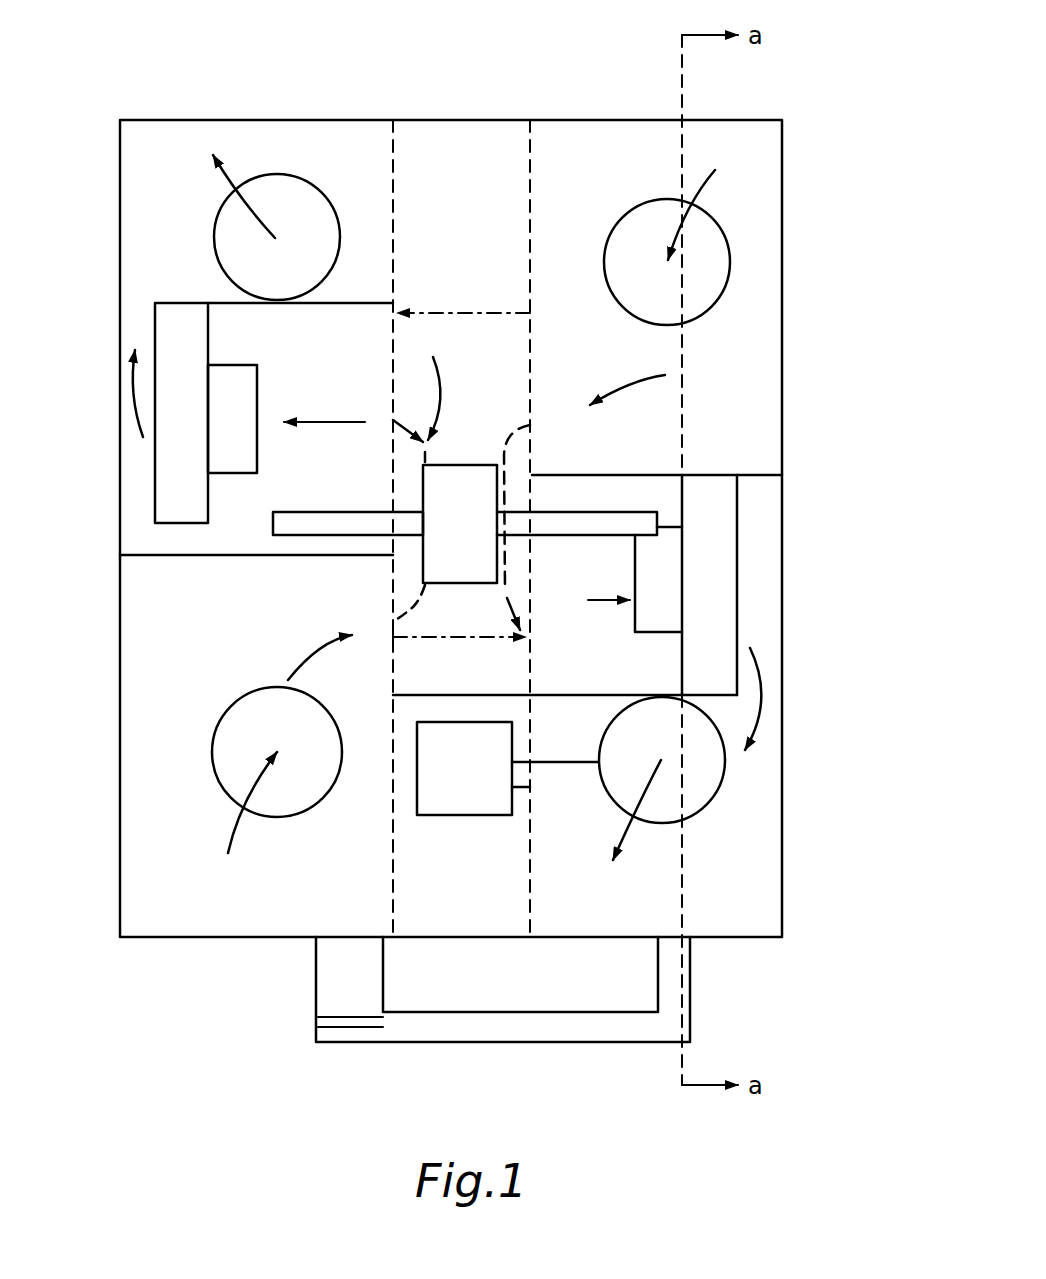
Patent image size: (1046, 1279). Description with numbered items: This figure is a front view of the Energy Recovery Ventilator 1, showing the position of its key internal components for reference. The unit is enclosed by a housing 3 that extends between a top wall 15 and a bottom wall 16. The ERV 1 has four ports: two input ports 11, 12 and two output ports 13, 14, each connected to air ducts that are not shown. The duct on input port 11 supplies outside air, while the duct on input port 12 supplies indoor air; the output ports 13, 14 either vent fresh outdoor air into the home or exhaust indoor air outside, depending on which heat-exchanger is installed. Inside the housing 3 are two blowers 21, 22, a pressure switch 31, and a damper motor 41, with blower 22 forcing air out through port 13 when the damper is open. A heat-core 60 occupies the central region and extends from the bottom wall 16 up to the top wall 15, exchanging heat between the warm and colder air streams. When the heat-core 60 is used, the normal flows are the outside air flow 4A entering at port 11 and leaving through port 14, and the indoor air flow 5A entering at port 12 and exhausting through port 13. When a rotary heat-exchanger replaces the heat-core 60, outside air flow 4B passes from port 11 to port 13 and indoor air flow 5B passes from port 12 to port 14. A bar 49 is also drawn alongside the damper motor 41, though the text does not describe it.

The Energy Recovery Ventilator 1 is at (741, 106).
The housing 3 is at (788, 310).
The input port 11 is at (238, 707).
The input port 12 is at (728, 247).
The output port 13 is at (715, 800).
The output port 14 is at (306, 180).
The top wall 15 is at (495, 120).
The bottom wall 16 is at (463, 940).
The blower 21 is at (172, 472).
The blower 22 is at (728, 578).
The pressure switch 31 is at (463, 800).
The damper motor 41 is at (458, 470).
The guide bar 49 is at (343, 512).
The heat-core 60 is at (467, 170).
The air flow 4A is at (434, 385).
The air flow 4B is at (432, 637).
The air flow 5A is at (507, 457).
The air flow 5B is at (458, 318).